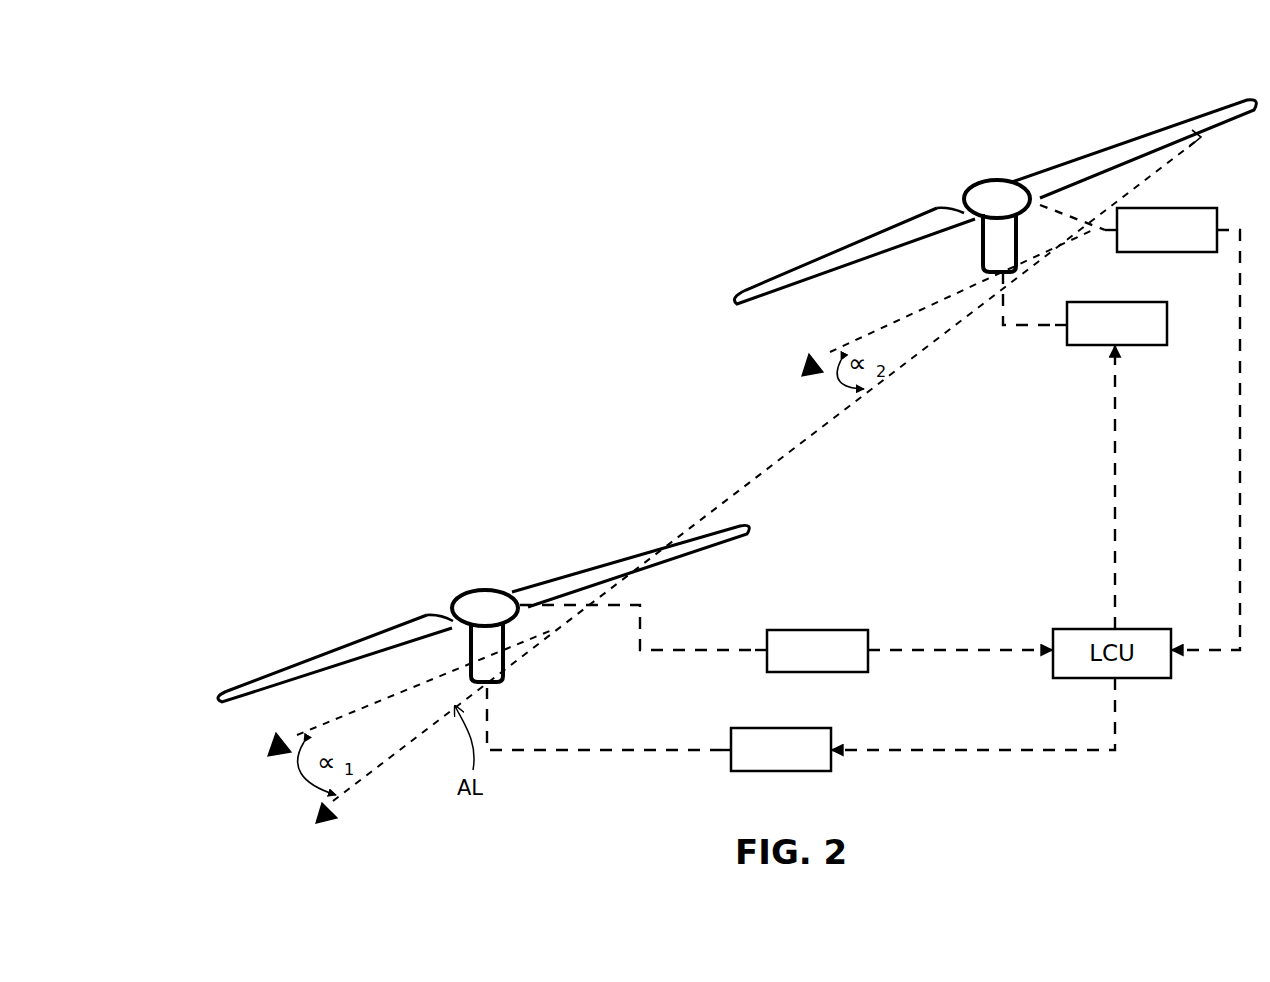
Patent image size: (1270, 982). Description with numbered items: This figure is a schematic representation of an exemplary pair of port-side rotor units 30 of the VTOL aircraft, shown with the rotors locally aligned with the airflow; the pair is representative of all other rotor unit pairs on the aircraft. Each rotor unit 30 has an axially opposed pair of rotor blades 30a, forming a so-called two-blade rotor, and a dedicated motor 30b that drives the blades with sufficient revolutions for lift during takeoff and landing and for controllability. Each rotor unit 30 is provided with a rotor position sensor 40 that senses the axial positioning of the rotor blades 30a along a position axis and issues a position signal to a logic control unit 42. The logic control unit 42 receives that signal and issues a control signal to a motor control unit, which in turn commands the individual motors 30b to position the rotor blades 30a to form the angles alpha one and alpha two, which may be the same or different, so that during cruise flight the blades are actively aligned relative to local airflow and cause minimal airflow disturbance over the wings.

The port-side rotor unit 30 is at (999, 178).
The rotor blades 30a is at (838, 248).
The motor 30b is at (1133, 140).
The rotor position sensor (RPS) 40 is at (1170, 207).
The logic control unit (LCU) 42 is at (1104, 302).